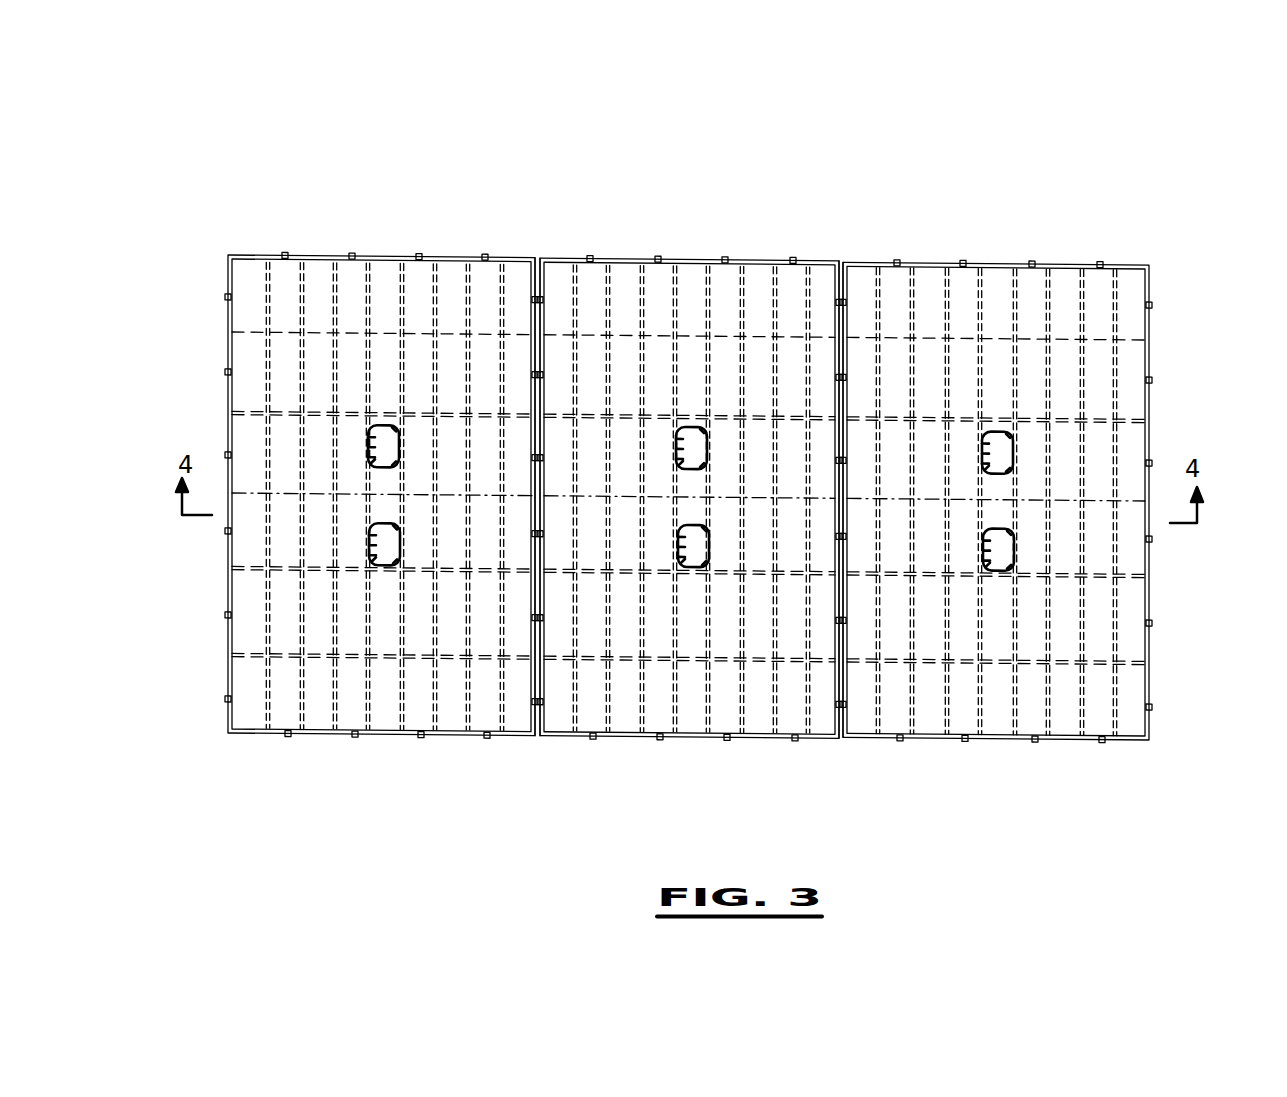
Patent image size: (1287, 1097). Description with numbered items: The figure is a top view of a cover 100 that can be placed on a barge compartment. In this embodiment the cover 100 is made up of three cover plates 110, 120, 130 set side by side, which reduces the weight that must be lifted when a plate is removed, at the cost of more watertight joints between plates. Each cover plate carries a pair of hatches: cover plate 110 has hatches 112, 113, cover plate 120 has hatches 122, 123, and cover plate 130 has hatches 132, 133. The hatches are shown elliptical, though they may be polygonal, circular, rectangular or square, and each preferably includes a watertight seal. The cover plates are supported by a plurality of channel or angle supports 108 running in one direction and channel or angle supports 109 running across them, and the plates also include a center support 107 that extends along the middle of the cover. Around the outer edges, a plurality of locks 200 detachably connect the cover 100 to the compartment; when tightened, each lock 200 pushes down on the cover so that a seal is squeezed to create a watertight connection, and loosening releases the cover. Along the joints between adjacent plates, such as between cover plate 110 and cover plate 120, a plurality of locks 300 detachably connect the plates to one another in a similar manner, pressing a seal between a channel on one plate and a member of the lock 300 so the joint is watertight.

The cover 100 is at (771, 114).
The center support 107 is at (240, 493).
The channel or angle supports 108 is at (335, 262).
The channel or angle supports 109 is at (1120, 568).
The cover plate 110 is at (1000, 263).
The hatch 112 is at (995, 572).
The hatch 113 is at (992, 430).
The cover plate 120 is at (690, 262).
The hatch 122 is at (700, 568).
The hatch 123 is at (688, 428).
The cover plate 130 is at (432, 255).
The hatch 132 is at (385, 565).
The hatch 133 is at (380, 428).
The lock 200 is at (898, 262).
The lock 300 is at (553, 262).